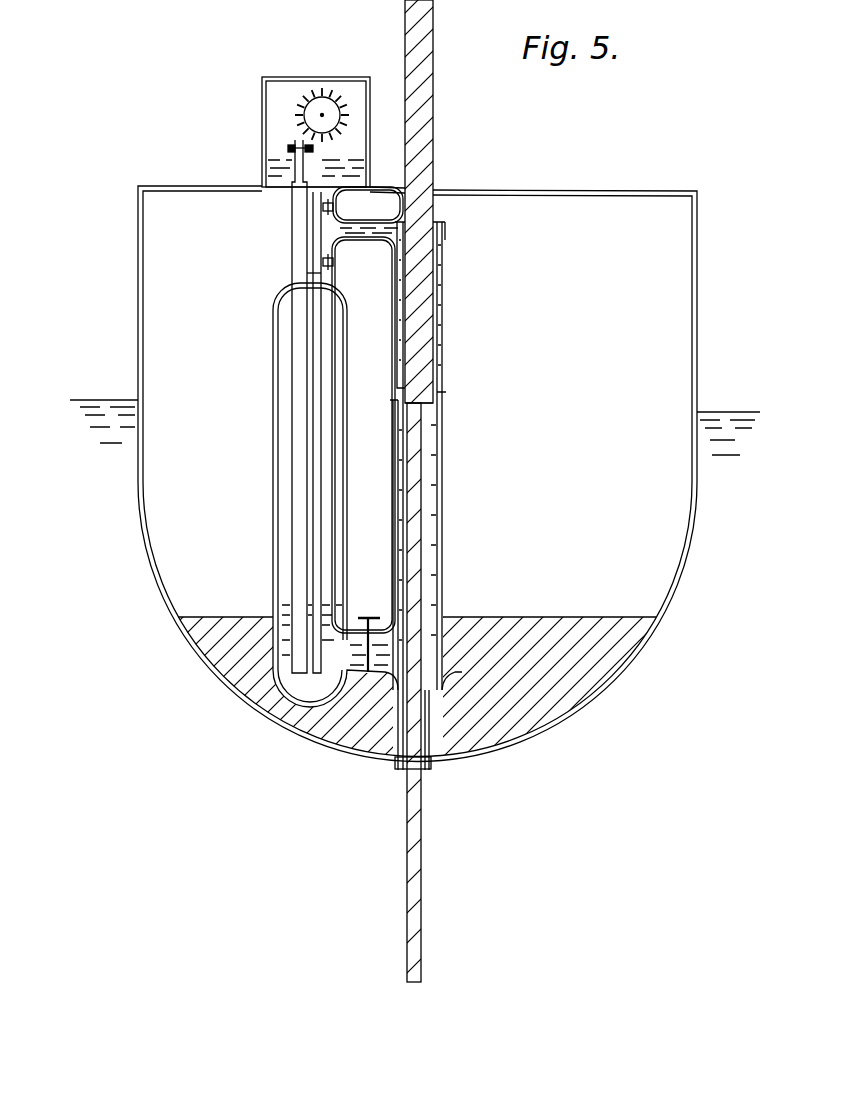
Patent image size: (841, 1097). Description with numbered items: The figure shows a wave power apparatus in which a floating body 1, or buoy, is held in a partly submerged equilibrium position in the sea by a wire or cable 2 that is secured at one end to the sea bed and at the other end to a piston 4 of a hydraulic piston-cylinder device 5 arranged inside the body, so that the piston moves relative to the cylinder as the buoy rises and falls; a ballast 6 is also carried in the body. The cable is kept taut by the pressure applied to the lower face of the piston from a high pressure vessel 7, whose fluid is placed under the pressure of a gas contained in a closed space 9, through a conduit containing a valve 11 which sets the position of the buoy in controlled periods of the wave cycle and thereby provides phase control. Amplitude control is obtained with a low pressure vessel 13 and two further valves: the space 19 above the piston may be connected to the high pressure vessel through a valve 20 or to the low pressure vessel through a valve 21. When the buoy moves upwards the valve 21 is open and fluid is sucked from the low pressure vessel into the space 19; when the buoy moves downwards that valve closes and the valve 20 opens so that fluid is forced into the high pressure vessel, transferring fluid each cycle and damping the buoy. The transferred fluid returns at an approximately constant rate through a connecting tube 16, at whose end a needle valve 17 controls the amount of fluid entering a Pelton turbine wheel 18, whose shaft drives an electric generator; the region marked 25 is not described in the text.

The floating body 1 is at (162, 596).
The wire or cable 2 is at (410, 1002).
The piston 4 is at (420, 392).
The hydraulic piston-cylinder device 5 is at (432, 453).
The ballast 6 is at (553, 705).
The high pressure vessel 7 is at (273, 355).
The closed space 9 is at (285, 313).
The valve 11 is at (372, 612).
The low pressure vessel 13 is at (262, 92).
The connecting tube 16 is at (292, 238).
The needle valve 17 is at (296, 143).
The Pelton turbine wheel 18 is at (325, 102).
The space above the piston 19 is at (437, 337).
The valve 20 is at (333, 263).
The valve 21 is at (333, 207).
The chamber liquid 25 is at (288, 90).